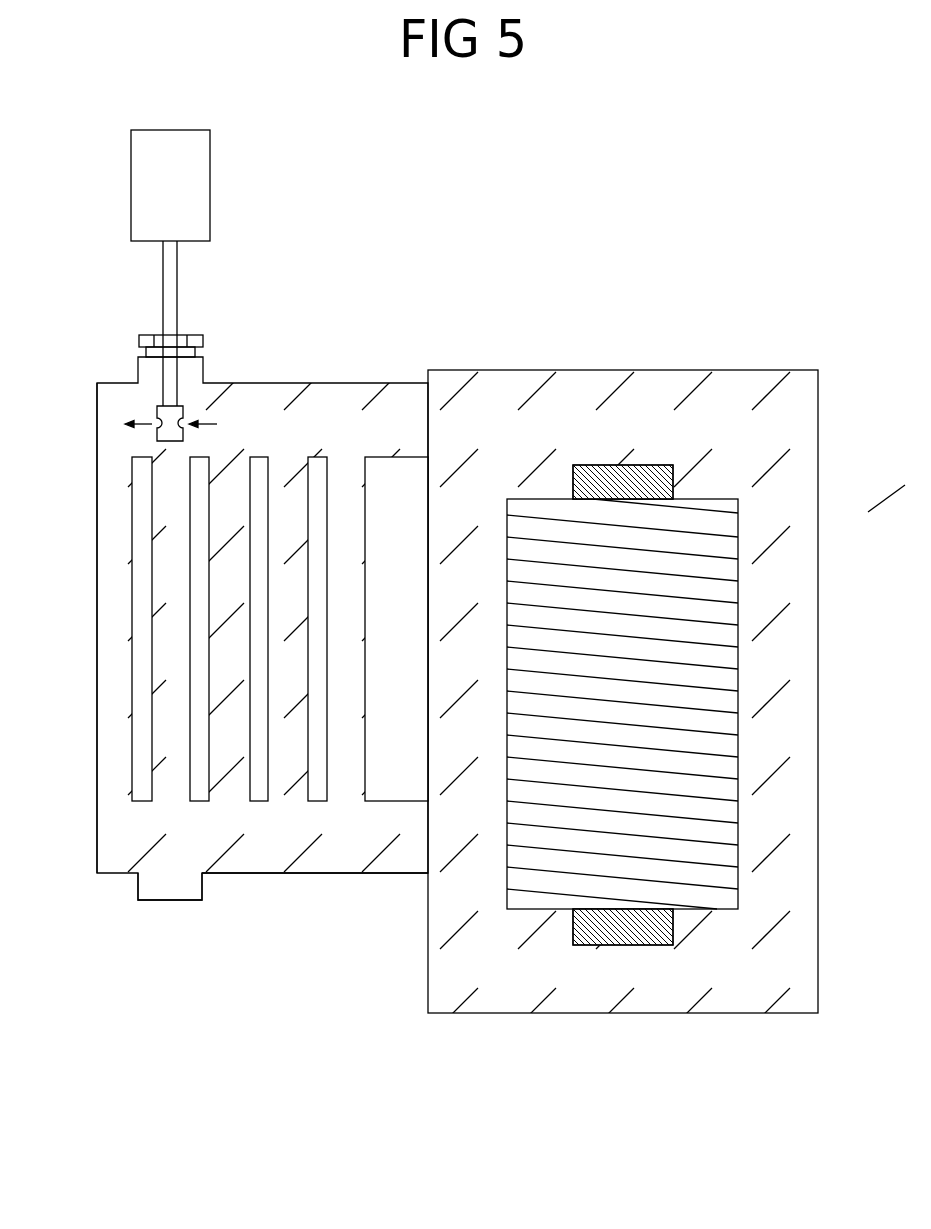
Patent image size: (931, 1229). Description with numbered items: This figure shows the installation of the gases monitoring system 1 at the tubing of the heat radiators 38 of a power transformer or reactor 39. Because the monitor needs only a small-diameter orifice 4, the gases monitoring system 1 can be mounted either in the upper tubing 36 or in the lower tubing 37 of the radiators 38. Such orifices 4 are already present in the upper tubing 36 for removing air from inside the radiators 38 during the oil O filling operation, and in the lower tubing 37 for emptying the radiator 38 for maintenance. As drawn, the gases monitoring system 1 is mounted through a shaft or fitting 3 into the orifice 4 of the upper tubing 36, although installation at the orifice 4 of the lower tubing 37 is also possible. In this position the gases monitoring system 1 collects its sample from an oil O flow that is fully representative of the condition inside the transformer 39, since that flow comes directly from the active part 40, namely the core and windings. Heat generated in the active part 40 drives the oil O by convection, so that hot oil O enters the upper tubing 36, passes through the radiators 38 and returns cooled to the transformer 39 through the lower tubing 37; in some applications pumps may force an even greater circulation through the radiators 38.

The gases monitoring system 1 is at (125, 197).
The shaft 3 is at (132, 322).
The orifice 4 is at (130, 355).
The upper tubing 36 is at (346, 374).
The lower tubing 37 is at (364, 883).
The heat radiators 38 is at (94, 642).
The transformer 39 is at (492, 360).
The active part 40 is at (687, 927).
The oil O is at (212, 390).